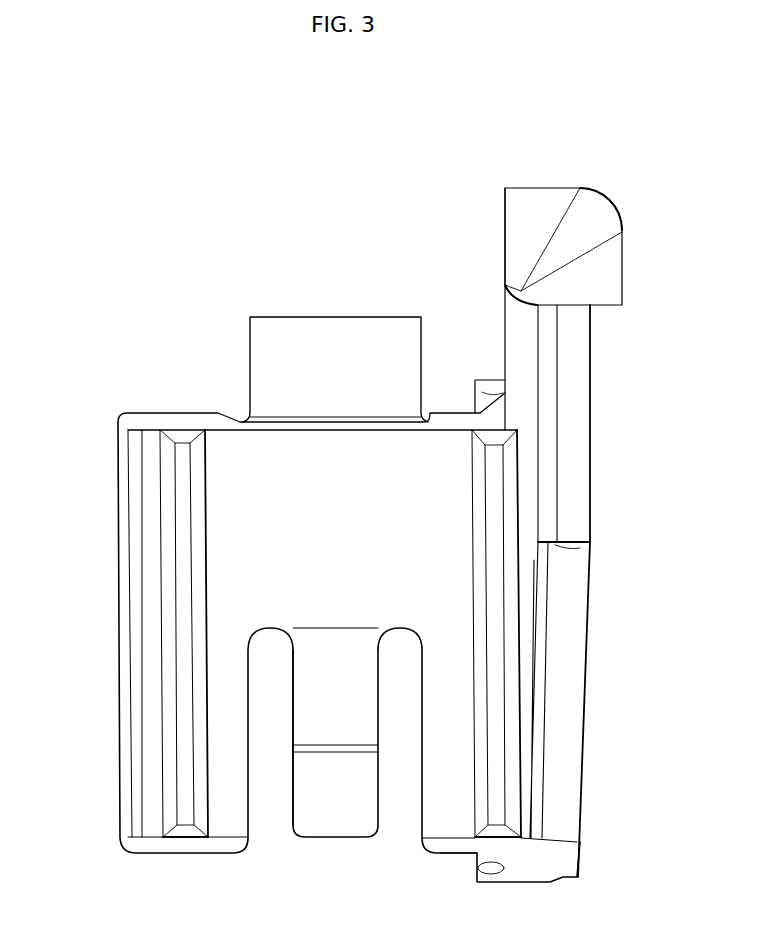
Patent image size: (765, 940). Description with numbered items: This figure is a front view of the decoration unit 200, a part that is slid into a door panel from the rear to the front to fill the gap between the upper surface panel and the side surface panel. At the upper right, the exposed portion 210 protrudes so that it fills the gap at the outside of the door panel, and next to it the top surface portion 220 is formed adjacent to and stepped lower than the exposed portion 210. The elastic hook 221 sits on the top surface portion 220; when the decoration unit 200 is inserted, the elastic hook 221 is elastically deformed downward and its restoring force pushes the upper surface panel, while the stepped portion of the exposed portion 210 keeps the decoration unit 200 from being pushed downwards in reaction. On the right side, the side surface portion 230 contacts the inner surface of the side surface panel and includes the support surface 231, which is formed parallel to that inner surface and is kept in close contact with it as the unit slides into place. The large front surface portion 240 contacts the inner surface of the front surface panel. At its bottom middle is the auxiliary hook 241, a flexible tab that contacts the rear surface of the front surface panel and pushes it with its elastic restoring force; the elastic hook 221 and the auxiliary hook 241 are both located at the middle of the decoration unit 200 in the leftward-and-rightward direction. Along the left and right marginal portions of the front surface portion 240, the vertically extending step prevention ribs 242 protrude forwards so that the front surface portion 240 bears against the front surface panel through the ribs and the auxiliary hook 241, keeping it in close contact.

The decoration unit 200 is at (414, 230).
The exposed portion 210 is at (580, 190).
The top surface portion 220 is at (216, 412).
The elastic hook 221 is at (338, 346).
The side surface portion 230 is at (600, 476).
The support surface 231 is at (592, 373).
The front surface portion 240 is at (249, 529).
The auxiliary hook 241 is at (337, 810).
The step prevention ribs 242 is at (187, 812).